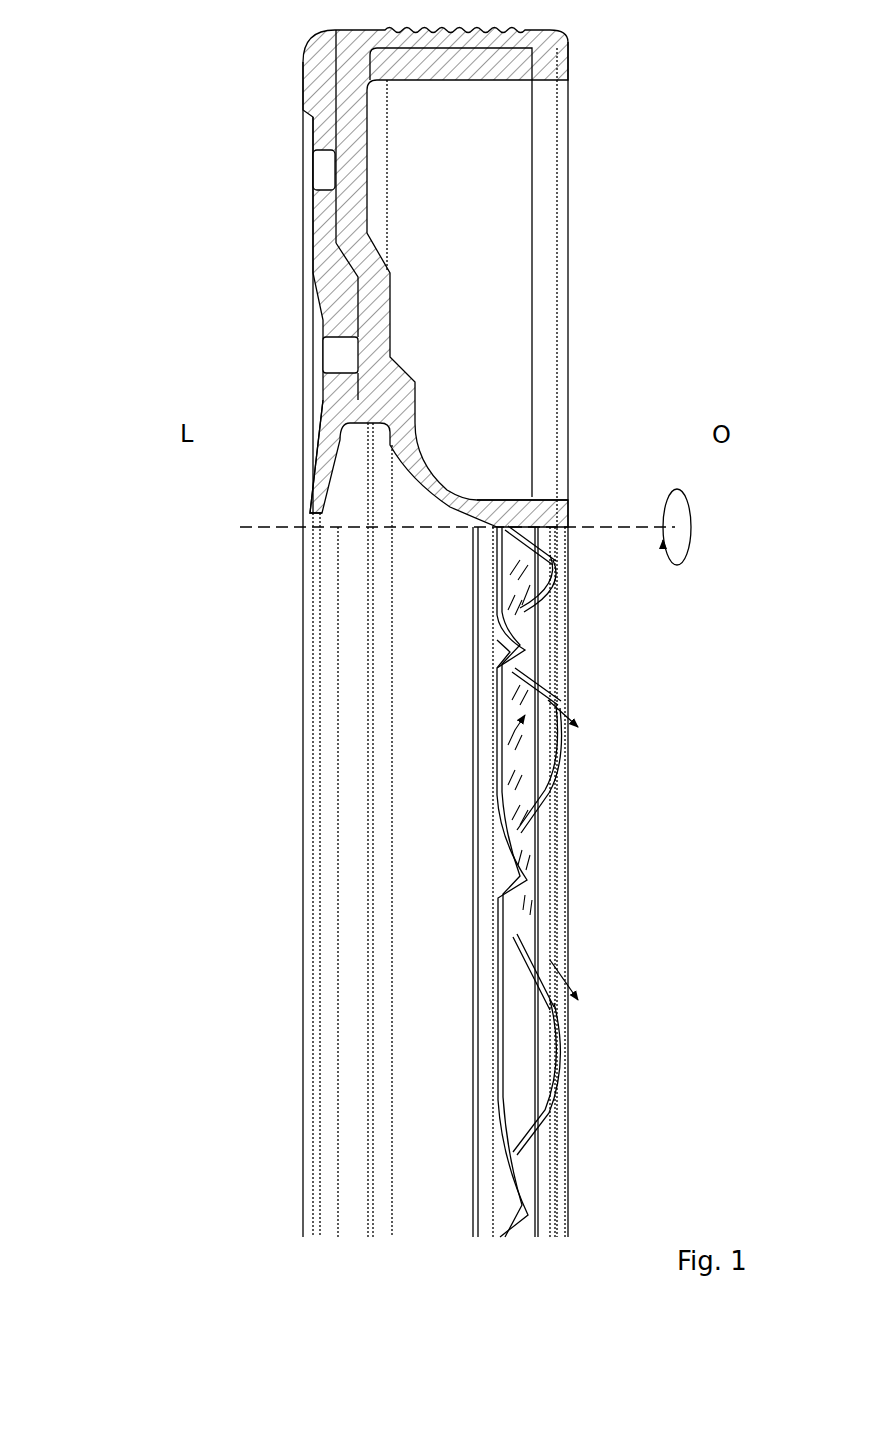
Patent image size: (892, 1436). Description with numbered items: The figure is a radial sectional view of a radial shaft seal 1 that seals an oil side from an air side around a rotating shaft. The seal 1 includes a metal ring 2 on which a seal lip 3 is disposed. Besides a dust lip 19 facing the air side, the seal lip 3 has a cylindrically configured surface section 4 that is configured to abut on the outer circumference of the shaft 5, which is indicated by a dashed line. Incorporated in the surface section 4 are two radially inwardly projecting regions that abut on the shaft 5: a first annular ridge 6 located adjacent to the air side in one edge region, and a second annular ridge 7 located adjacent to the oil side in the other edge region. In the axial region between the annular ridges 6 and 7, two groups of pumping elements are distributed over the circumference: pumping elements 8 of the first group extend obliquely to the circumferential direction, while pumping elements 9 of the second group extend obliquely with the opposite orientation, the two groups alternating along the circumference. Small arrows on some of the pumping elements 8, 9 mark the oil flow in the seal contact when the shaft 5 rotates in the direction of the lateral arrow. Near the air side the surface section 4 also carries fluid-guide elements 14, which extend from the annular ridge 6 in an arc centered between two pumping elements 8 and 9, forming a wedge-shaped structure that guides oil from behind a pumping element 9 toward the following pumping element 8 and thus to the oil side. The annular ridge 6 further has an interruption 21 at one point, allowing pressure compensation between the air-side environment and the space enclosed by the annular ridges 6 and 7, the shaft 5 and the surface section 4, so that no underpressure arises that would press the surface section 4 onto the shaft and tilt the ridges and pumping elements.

The radial shaft seal 1 is at (222, 215).
The metal ring 2 is at (497, 70).
The seal lip 3 is at (413, 478).
The surface section 4 is at (520, 488).
The shaft 5 is at (277, 527).
The first annular ridge 6 is at (493, 885).
The second annular ridge 7 is at (553, 1183).
The pumping elements of a first group 8 is at (545, 535).
The pumping elements of a second group 9 is at (557, 590).
The fluid-guide element 14 is at (497, 650).
The dust lip 19 is at (305, 497).
The interruption 21 is at (492, 750).